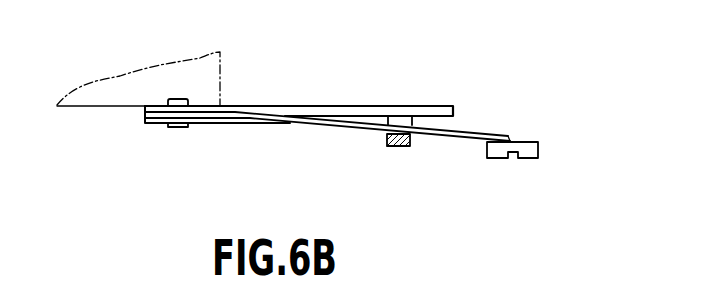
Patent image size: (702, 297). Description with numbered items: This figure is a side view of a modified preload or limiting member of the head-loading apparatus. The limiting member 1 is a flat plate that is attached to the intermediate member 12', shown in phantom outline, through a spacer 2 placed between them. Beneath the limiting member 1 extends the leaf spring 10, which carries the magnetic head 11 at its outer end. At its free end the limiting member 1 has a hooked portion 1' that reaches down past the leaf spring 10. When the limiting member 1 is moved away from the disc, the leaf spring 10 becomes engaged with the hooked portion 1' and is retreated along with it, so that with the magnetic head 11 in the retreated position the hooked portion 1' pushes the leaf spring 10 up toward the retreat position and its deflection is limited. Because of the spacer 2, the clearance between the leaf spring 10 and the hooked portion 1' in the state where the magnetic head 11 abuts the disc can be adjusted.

The limiting member 1 is at (299, 86).
The hooked portion 1' is at (378, 148).
The spacer 2 is at (143, 115).
The leaf spring 10 is at (457, 139).
The magnetic head 11 is at (538, 147).
The intermediate member 12' is at (168, 73).